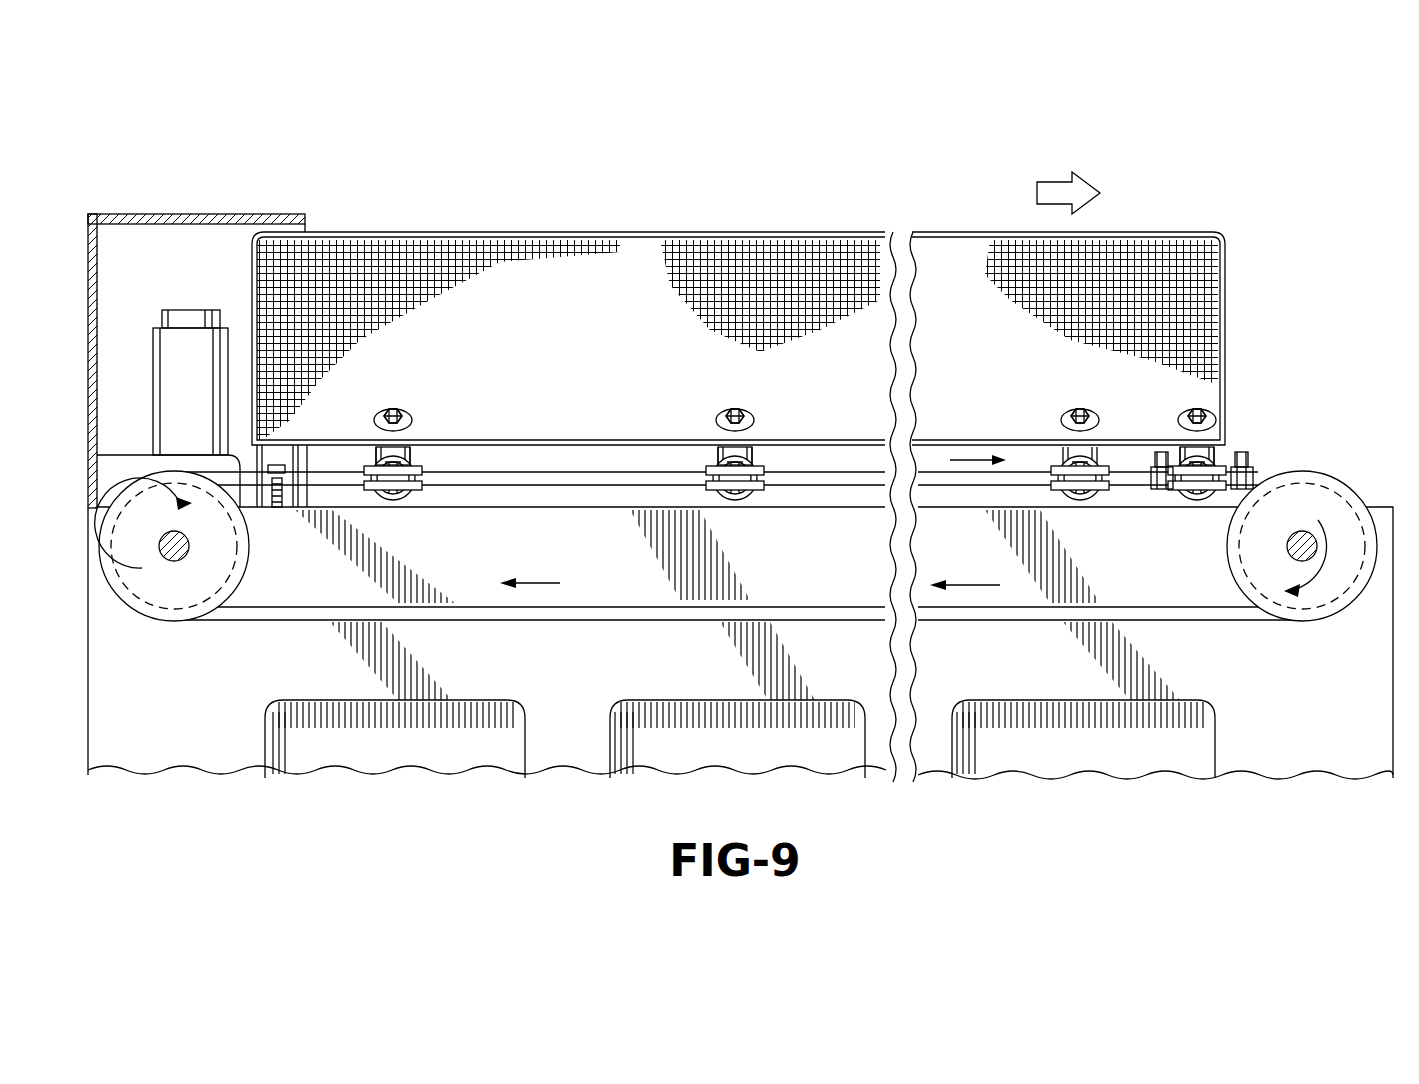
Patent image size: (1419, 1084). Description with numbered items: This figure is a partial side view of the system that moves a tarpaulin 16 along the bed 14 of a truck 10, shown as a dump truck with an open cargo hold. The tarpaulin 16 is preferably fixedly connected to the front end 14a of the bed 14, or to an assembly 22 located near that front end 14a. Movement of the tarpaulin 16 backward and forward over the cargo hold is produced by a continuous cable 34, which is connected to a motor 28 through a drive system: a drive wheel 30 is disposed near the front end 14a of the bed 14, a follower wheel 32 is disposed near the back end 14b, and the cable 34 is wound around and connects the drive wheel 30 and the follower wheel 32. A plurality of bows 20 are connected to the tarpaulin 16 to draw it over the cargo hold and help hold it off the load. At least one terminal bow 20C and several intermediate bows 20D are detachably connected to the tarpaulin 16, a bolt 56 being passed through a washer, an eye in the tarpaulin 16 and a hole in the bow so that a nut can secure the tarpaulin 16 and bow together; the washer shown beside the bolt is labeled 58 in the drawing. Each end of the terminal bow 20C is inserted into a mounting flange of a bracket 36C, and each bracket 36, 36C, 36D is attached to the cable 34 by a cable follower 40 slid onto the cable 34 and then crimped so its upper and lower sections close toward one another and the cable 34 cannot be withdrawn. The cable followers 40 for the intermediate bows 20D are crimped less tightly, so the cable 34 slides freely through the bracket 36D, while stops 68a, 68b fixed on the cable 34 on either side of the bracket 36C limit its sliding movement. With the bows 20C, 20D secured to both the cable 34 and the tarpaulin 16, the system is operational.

The truck 10 is at (751, 501).
The bed 14 is at (568, 780).
The front end 14a is at (135, 770).
The back end 14b is at (1290, 773).
The tarpaulin 16 is at (610, 250).
The bow 20 is at (727, 450).
The terminal bow 20C is at (1185, 448).
The intermediate bow 20D is at (385, 450).
The assembly 22 is at (292, 455).
The motor 28 is at (192, 335).
The drive wheel 30 is at (163, 595).
The follower wheel 32 is at (1333, 600).
The cable 34 is at (255, 620).
The bracket 36 is at (728, 506).
The bracket 36C is at (1204, 505).
The bracket 36D is at (405, 505).
The cable follower 40 is at (742, 495).
The bolt 56 is at (400, 414).
The washer 58 is at (412, 425).
The stop 68a is at (1243, 452).
The stop 68b is at (1160, 489).